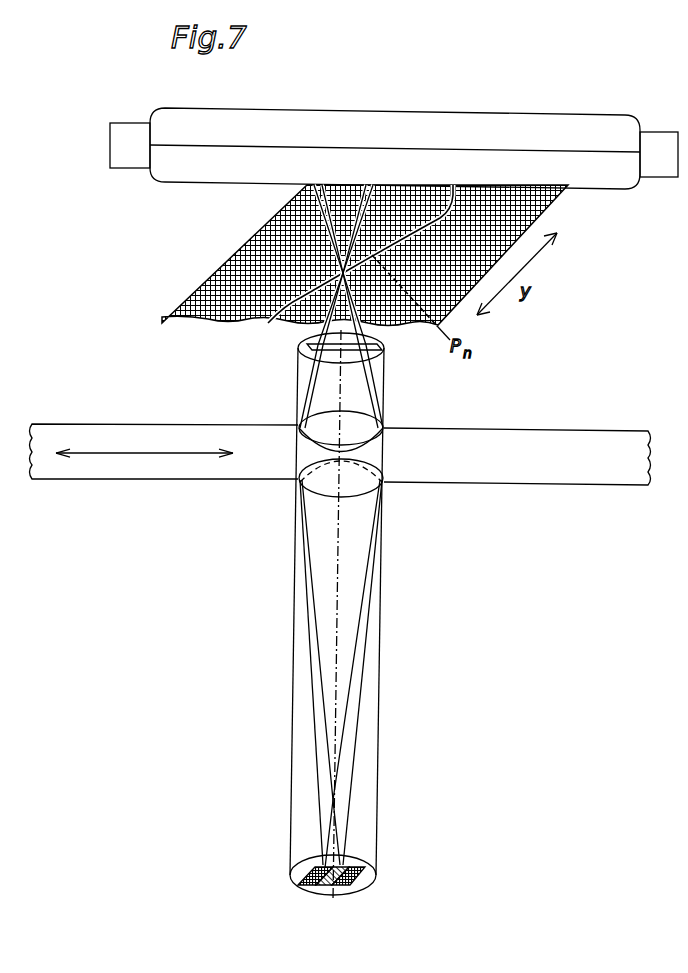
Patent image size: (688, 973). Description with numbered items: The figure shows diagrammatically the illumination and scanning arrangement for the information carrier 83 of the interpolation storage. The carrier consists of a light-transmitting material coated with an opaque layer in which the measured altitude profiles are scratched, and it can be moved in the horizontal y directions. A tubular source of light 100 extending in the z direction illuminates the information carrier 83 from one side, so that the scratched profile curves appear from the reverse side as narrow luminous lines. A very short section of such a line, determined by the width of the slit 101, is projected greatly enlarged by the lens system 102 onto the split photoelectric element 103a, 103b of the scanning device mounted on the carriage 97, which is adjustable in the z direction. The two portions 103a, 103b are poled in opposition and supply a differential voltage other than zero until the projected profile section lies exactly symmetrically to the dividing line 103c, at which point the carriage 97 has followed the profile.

The tubular source of light 100 is at (468, 109).
The information carrier 83 is at (205, 287).
The slit 101 is at (382, 352).
The carriage 97 is at (604, 445).
The lens system 102 is at (363, 428).
The photoelectric element 103a is at (297, 878).
The photoelectric element 103b is at (372, 878).
The dividing line 103c is at (329, 905).